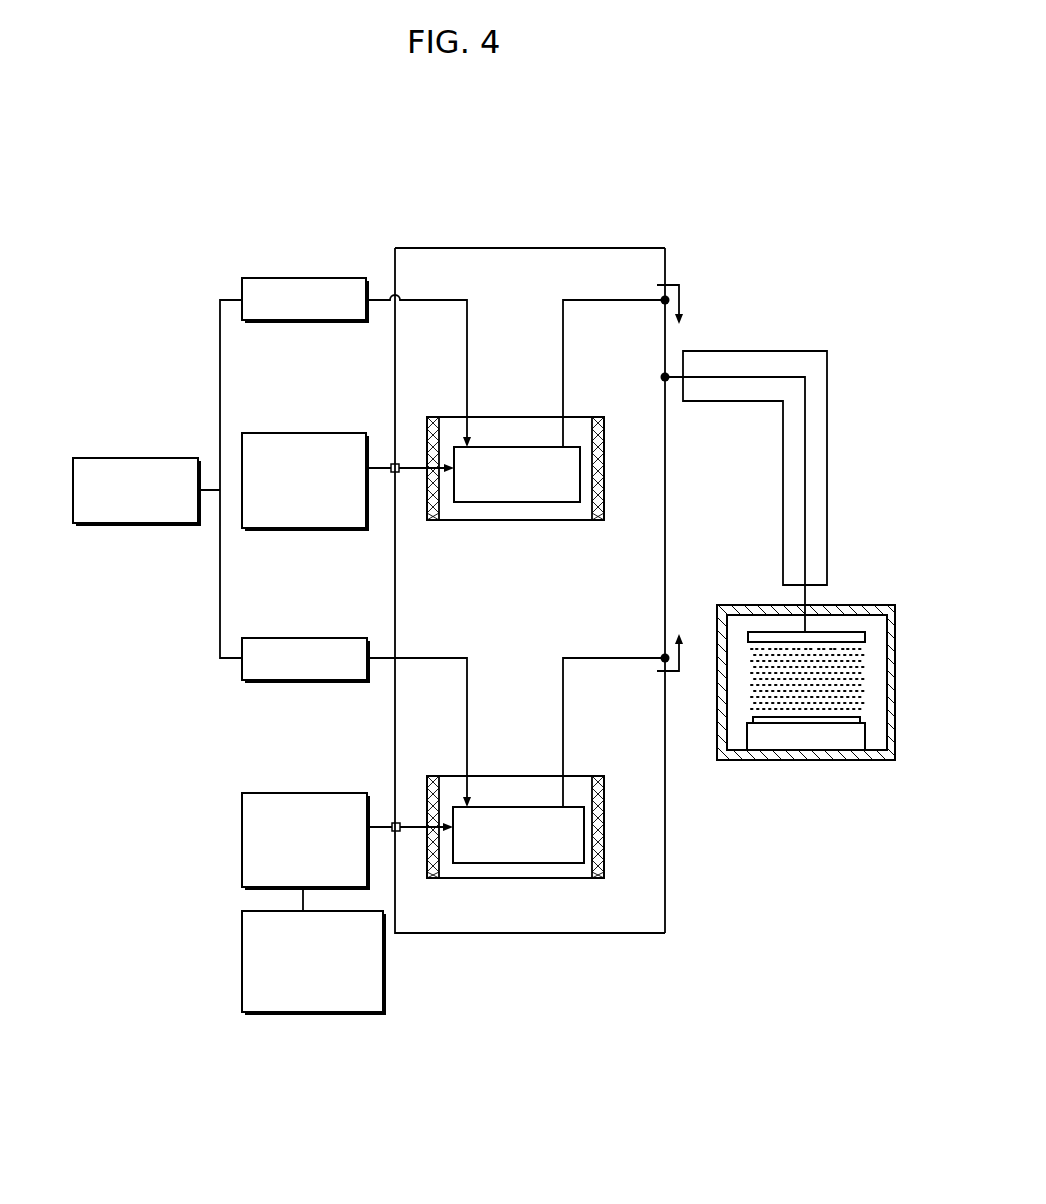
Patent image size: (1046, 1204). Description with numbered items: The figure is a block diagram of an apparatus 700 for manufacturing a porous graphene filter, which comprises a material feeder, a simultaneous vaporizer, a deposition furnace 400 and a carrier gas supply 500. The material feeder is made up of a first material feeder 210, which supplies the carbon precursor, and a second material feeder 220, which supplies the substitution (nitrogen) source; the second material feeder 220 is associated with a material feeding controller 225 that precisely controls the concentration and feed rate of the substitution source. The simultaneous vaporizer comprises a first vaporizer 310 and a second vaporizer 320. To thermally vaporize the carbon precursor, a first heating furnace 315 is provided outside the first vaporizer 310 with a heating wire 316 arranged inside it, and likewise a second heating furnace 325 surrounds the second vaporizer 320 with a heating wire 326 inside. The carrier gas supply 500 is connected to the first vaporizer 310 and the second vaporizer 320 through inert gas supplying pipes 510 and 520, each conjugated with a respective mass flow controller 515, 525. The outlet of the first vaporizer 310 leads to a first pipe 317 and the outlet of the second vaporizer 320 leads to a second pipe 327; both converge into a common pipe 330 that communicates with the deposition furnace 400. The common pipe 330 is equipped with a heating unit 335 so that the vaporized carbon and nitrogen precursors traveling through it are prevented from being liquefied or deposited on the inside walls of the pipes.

The apparatus for manufacturing a porous graphene filter 700 is at (734, 176).
The carrier gas supply 500 is at (137, 450).
The first mass flow controller (MFC) 515 is at (311, 276).
The second mass flow controller (MFC) 525 is at (311, 636).
The inert gas supplying pipe 510 is at (424, 246).
The inert gas supplying pipe 520 is at (418, 656).
The first material feeder 210 is at (323, 426).
The second material feeder 220 is at (323, 786).
The material feeding controller 225 is at (242, 944).
The first heating furnace 315 is at (632, 482).
The first vaporizer 310 is at (513, 503).
The heating wire 316 is at (597, 521).
The first pipe 317 is at (642, 302).
The second heating furnace 325 is at (622, 880).
The second vaporizer 320 is at (518, 806).
The heating wire 326 is at (595, 870).
The second pipe 327 is at (626, 660).
The common pipe 330 is at (737, 375).
The heating unit 335 is at (829, 462).
The deposition furnace 400 is at (796, 770).